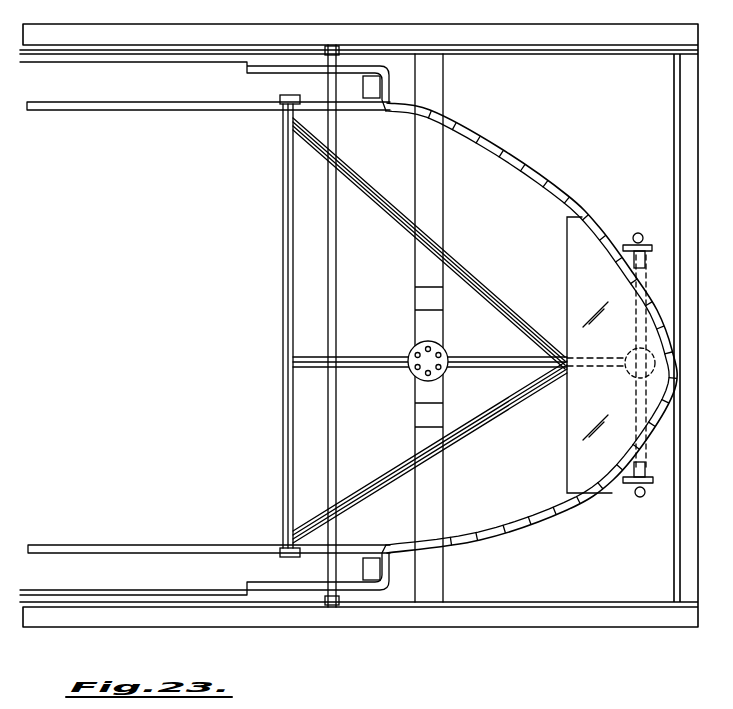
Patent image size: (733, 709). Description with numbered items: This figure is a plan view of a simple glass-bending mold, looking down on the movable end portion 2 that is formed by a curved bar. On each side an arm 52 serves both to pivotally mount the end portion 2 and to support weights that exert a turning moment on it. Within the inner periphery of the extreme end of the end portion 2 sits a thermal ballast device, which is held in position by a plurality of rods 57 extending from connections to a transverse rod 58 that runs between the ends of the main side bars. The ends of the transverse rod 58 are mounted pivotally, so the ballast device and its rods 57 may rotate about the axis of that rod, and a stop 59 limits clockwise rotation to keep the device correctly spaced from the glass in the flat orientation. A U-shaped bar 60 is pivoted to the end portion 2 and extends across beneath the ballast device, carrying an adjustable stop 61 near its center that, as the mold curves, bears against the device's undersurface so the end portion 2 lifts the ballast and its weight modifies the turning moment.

The movable end portion 2 is at (549, 162).
The arm 52 is at (119, 62).
The rods 57 is at (375, 184).
The transverse rod 58 is at (289, 95).
The stop 59 is at (442, 368).
The U-shaped bar 60 is at (641, 234).
The adjustable stop 61 is at (625, 376).